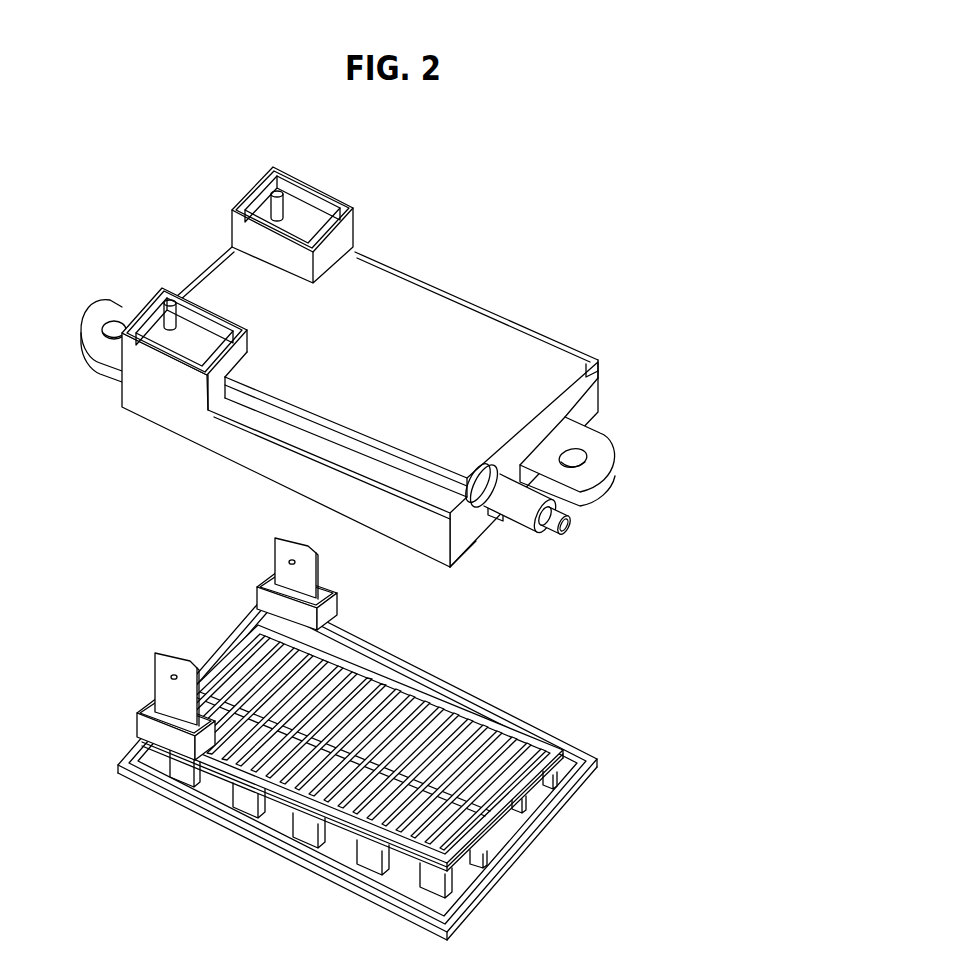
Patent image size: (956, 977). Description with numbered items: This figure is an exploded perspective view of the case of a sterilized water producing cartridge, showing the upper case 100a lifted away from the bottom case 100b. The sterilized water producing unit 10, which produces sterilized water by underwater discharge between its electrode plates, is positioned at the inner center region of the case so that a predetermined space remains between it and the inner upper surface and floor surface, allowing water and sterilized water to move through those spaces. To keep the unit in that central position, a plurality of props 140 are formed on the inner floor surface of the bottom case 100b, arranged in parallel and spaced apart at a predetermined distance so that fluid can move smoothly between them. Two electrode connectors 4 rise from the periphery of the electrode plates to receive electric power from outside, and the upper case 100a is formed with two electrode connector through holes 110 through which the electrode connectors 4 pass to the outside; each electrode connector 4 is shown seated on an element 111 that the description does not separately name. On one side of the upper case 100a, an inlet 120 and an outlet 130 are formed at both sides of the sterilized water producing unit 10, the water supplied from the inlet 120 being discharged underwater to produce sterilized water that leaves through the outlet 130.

The upper case 100a is at (457, 328).
The bottom case 100b is at (533, 847).
The electrode connector through hole 110 is at (262, 181).
The terminal block 111 is at (330, 608).
The electrode connector 4 is at (276, 550).
The sterilized water producing unit 10 is at (570, 745).
The inlet 120 is at (570, 533).
The outlet 130 is at (516, 512).
The props 140 is at (428, 884).